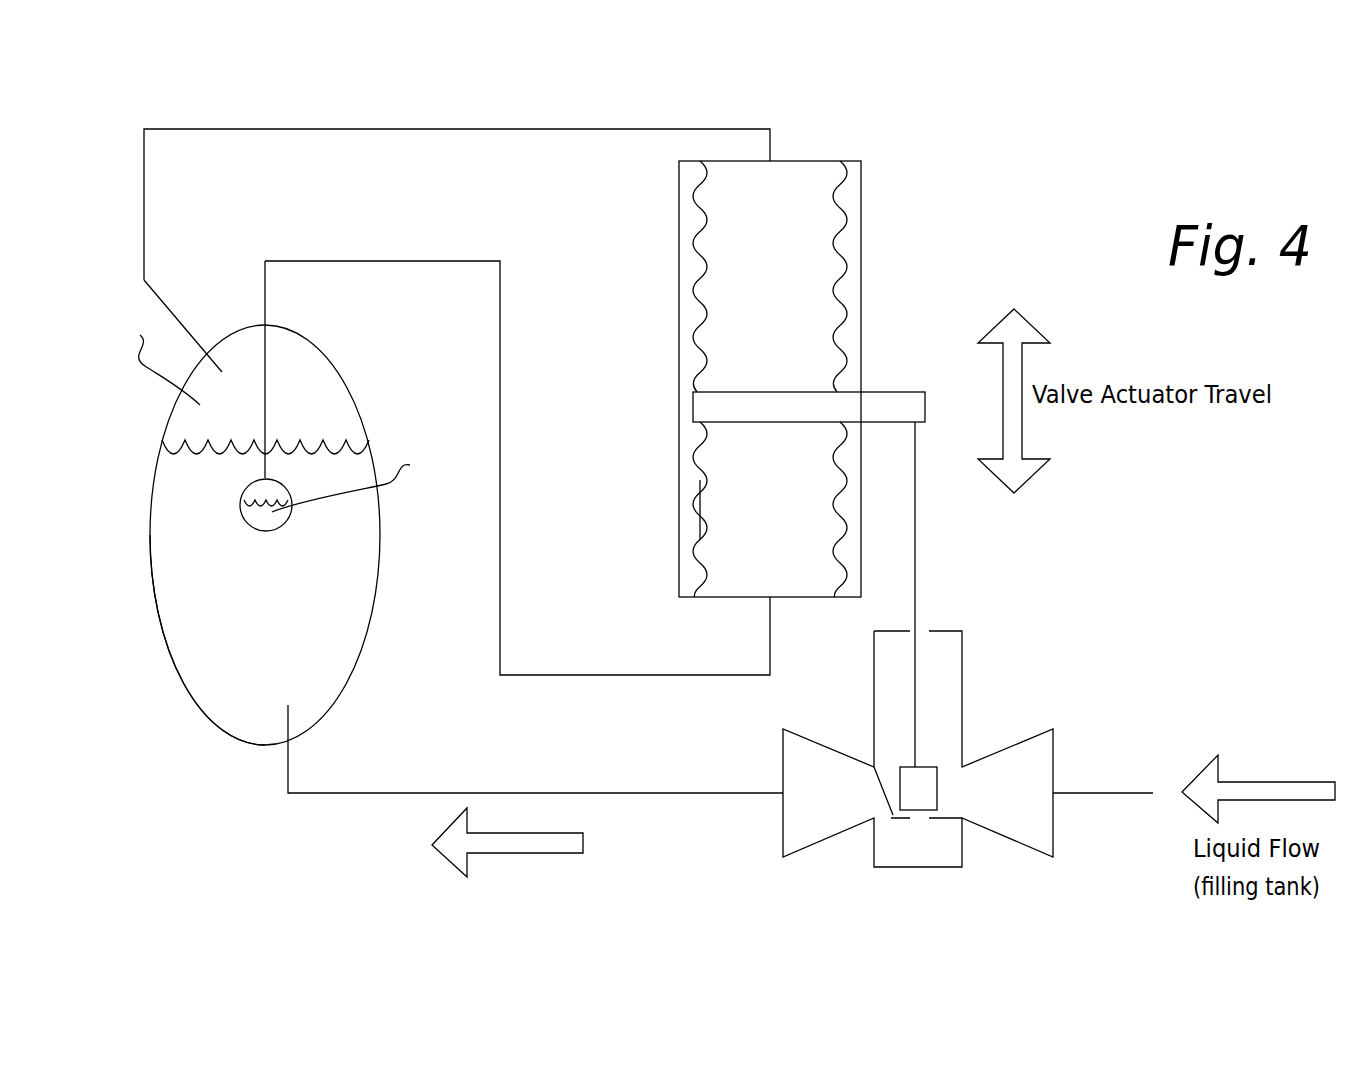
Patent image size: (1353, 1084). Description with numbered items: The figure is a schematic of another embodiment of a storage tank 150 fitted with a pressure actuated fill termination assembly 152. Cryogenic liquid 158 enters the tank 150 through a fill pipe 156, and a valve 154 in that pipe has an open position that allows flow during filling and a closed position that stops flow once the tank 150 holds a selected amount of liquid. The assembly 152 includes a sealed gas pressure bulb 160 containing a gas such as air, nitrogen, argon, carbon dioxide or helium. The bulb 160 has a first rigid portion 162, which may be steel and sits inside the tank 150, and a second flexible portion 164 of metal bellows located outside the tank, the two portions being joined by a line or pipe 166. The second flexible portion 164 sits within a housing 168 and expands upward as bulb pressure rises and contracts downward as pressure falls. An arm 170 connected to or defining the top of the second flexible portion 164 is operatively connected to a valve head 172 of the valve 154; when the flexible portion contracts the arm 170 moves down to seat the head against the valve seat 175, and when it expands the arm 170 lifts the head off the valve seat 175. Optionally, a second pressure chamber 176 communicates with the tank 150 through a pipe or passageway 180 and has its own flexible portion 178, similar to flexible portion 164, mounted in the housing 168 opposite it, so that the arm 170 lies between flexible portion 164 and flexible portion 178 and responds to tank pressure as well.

The storage tank 150 is at (163, 430).
The fill termination assembly 152 is at (808, 429).
The valve 154 is at (925, 762).
The fill pipe 156 is at (528, 793).
The cryogenic liquid 158 is at (202, 647).
The gas pressure bulb 160 is at (277, 516).
The first rigid portion 162 is at (266, 492).
The second flexible portion 164 is at (718, 477).
The line or pipe 166 is at (432, 261).
The housing 168 is at (860, 247).
The arm 170 is at (893, 400).
The valve head 172 is at (927, 797).
The valve seat 175 is at (877, 823).
The second pressure chamber 176 is at (695, 261).
The flexible portion 178 is at (825, 212).
The pipe or passageway 180 is at (420, 129).